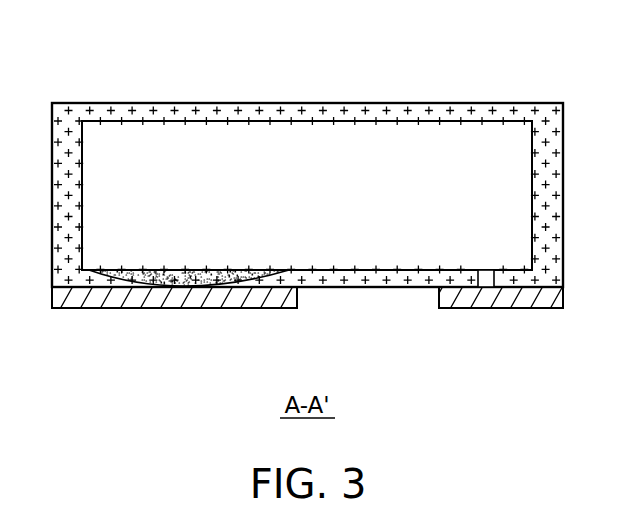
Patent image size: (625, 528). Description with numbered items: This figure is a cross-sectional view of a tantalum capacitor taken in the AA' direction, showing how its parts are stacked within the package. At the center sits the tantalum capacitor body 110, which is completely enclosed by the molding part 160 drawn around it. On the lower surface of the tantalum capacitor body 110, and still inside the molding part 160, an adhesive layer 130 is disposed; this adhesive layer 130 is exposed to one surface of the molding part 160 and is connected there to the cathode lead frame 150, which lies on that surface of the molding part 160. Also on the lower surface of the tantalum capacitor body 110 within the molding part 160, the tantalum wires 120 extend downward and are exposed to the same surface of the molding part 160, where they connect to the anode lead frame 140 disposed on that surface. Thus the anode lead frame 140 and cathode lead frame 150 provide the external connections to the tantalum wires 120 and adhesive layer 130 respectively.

The tantalum capacitor body 110 is at (305, 137).
The tantalum wires 120 is at (487, 280).
The adhesive layer 130 is at (178, 280).
The anode lead frame 140 is at (535, 297).
The cathode lead frame 150 is at (93, 297).
The molding part 160 is at (432, 112).